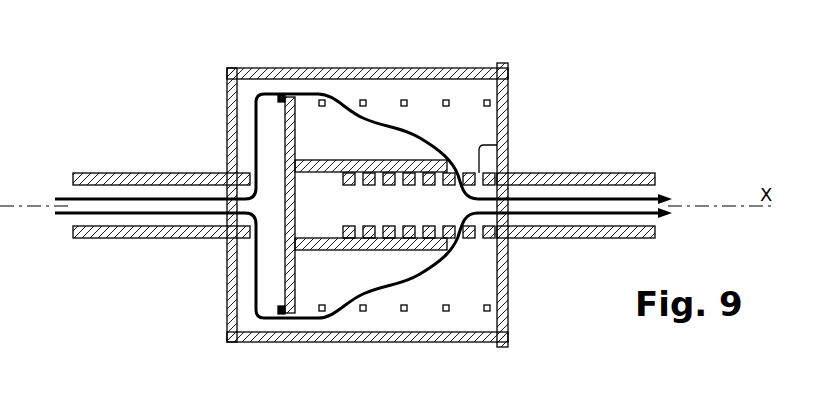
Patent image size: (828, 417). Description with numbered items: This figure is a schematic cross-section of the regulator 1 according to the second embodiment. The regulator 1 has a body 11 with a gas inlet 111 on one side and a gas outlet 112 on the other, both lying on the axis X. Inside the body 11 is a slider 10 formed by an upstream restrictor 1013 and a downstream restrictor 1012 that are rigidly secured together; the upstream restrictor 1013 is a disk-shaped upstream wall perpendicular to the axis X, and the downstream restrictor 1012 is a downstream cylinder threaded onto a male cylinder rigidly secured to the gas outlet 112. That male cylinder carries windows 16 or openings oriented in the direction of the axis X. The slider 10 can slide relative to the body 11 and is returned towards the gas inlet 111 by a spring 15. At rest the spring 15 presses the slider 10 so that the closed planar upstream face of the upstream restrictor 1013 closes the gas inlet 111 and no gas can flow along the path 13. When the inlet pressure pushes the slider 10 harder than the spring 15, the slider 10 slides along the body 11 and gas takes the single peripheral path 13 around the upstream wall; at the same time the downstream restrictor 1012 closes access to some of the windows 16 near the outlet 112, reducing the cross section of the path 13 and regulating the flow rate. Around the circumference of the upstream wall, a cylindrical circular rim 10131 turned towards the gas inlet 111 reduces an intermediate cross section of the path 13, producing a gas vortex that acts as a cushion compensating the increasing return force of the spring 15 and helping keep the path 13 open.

The regulator 1 is at (188, 69).
The insert 10 is at (363, 192).
The body 11 is at (412, 78).
The path 13 is at (380, 89).
The spring 15 is at (446, 100).
The windows 16 is at (482, 148).
The gas inlet 111 is at (56, 225).
The gas outlet 112 is at (672, 180).
The downstream restrictor 1012 is at (345, 249).
The upstream restrictor 1013 is at (290, 277).
The cylindrical circular rim 10131 is at (285, 95).